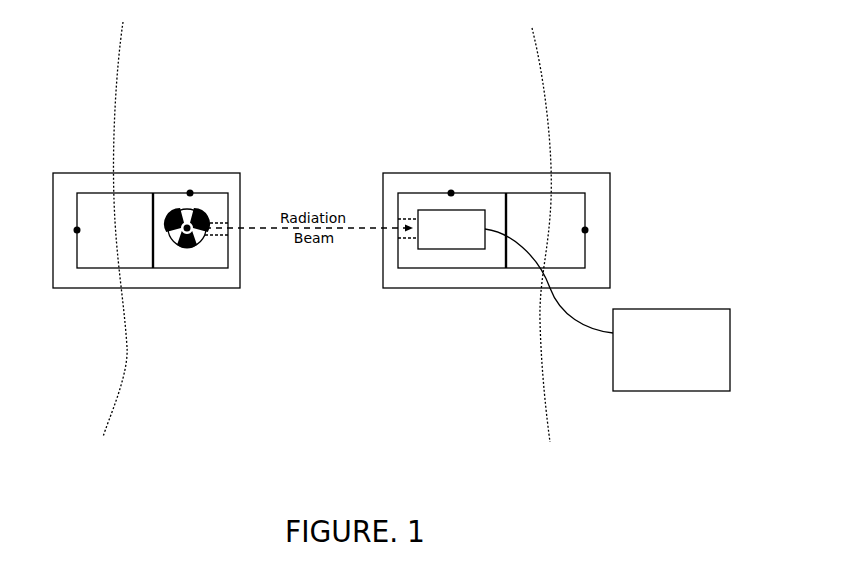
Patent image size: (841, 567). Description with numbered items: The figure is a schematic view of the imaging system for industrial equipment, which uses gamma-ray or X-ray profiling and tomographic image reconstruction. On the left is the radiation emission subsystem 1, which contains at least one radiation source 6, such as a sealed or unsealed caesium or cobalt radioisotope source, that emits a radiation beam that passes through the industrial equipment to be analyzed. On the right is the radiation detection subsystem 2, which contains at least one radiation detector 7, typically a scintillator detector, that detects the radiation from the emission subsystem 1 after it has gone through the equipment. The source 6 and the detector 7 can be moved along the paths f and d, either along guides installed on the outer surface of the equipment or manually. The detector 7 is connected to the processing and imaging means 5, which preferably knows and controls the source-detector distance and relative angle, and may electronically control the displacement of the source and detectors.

The radiation emission subsystem 1 is at (146, 173).
The radiation detection subsystem 2 is at (497, 173).
The processing and imaging means 5 is at (667, 391).
The radiation source 6 is at (190, 209).
The radiation detector 7 is at (451, 210).
The path of the source f is at (103, 437).
The path of the detector d is at (550, 442).